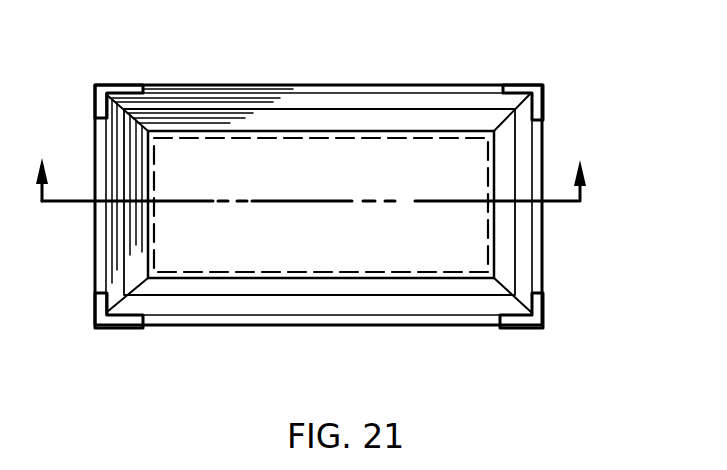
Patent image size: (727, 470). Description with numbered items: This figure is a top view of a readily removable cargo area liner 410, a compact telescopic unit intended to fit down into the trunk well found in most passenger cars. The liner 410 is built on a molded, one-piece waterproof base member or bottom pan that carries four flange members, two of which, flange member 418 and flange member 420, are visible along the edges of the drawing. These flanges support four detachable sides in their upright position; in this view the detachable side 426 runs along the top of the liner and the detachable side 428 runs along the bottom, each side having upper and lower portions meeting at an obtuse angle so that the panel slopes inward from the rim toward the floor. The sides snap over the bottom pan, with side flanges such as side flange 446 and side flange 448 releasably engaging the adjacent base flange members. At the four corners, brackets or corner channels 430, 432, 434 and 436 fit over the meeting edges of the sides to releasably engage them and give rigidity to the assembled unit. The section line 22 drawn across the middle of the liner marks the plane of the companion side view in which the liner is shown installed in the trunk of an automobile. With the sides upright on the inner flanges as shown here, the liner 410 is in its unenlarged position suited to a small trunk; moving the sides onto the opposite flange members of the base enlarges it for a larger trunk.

The cargo area liner 410 is at (335, 202).
The flange member 418 is at (195, 103).
The flange member 420 is at (392, 305).
The detachable side 426 is at (332, 84).
The detachable side 428 is at (265, 328).
The corner channel 430 is at (545, 302).
The corner channel 432 is at (95, 303).
The corner bracket 434 is at (545, 100).
The corner channel 436 is at (112, 84).
The side flange 446 is at (473, 285).
The side flange 448 is at (403, 118).
The section line 22 is at (320, 157).